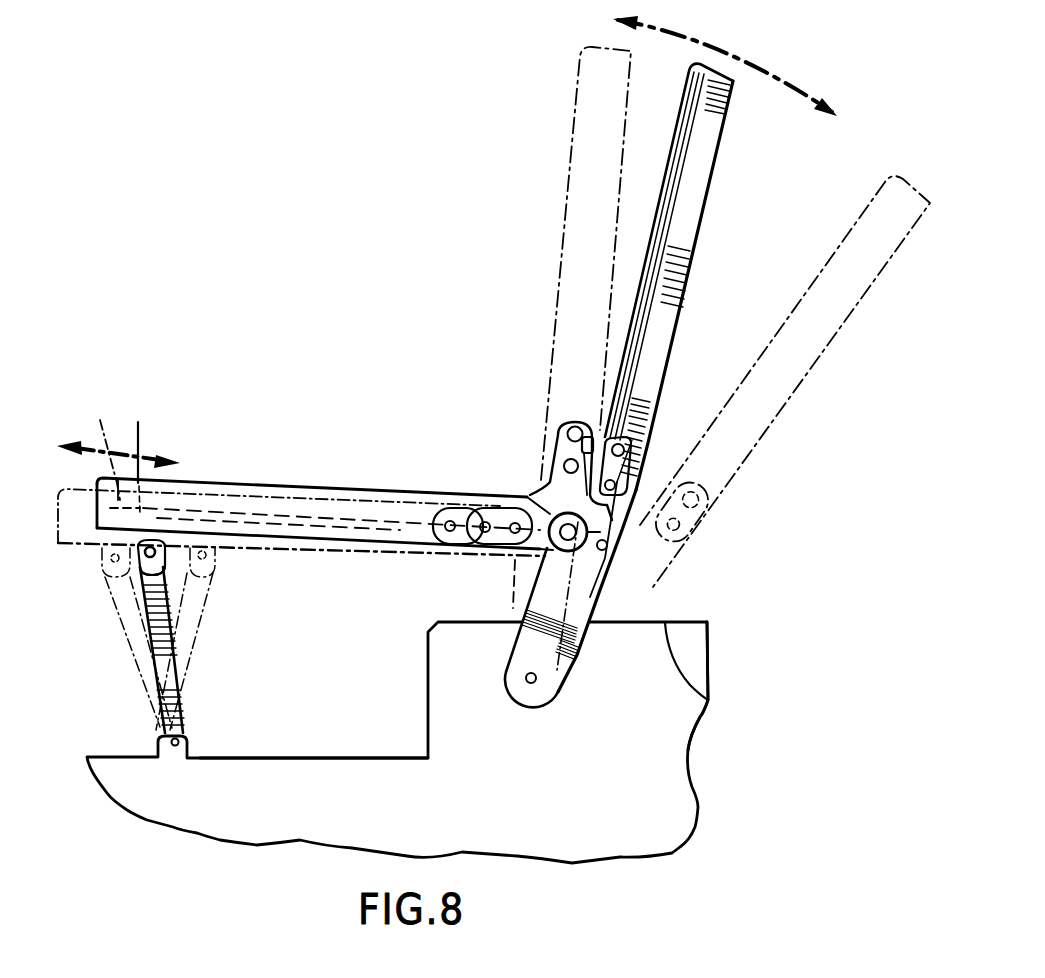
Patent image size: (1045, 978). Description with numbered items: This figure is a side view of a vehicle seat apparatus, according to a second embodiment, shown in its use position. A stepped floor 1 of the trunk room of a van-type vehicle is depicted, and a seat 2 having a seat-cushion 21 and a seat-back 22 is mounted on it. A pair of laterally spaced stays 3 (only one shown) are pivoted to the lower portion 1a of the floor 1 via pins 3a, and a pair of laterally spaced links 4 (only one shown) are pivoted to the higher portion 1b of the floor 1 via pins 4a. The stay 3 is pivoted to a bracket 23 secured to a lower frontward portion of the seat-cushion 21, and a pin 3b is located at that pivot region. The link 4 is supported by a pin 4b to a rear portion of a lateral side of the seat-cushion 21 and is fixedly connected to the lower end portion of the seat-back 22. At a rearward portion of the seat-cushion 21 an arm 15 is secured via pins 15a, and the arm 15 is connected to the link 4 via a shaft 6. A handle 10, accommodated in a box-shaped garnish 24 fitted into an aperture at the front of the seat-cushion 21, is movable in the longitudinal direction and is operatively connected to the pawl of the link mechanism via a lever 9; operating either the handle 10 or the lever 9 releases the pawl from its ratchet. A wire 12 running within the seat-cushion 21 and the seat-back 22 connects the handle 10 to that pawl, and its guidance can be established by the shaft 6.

The stepped floor 1 is at (694, 617).
The lower portion of the floor 1a is at (335, 758).
The higher portion of the floor 1b is at (708, 700).
The seat 2 is at (486, 292).
The stay 3 is at (152, 618).
The pin 3a is at (178, 737).
The front link upper bracket 3b is at (158, 567).
The link 4 is at (583, 603).
The pin 4a is at (537, 681).
The pin 4b is at (638, 448).
The shaft 6 is at (608, 541).
The lever 9 is at (583, 443).
The handle 10 is at (155, 515).
The wire 12 is at (362, 550).
The arm 15 is at (500, 513).
The pins 15a is at (514, 534).
The seat-cushion 21 is at (155, 413).
The seat-back 22 is at (696, 186).
The bracket 23 is at (158, 553).
The garnish 24 is at (118, 444).